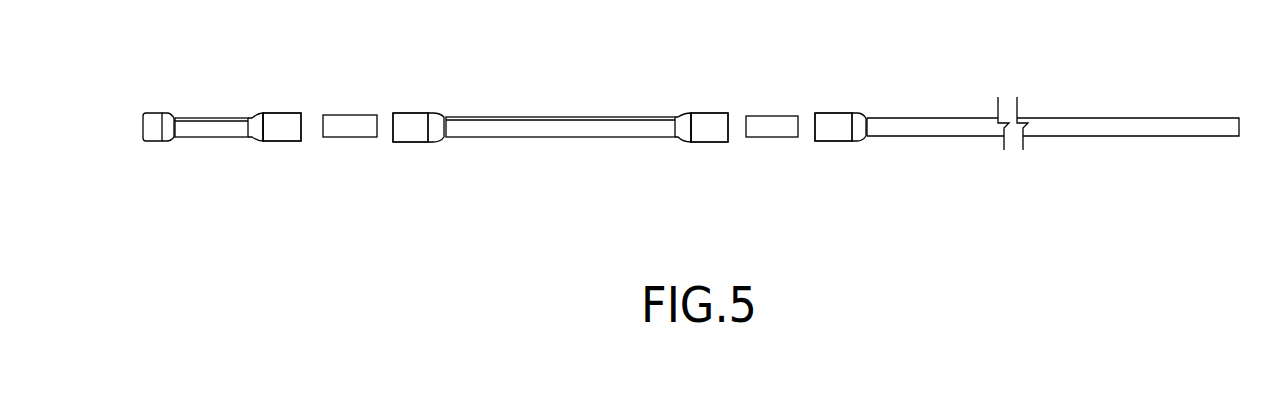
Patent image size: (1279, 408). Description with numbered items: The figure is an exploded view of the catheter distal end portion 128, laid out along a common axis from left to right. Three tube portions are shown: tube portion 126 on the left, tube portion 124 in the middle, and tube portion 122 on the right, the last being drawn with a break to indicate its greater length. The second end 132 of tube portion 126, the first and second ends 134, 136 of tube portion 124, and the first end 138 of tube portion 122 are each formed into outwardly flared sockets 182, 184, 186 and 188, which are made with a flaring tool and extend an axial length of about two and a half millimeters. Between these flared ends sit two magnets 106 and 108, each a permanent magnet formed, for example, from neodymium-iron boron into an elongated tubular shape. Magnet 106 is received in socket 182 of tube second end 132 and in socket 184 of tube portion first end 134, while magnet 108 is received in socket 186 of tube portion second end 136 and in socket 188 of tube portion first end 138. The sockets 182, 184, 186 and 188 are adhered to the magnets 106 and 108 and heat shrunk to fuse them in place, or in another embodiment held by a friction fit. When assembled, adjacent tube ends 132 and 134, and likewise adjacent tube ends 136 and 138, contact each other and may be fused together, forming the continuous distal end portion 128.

The magnet 106 is at (353, 138).
The magnet 108 is at (775, 138).
The tube portion 122 is at (938, 118).
The tube portion 124 is at (564, 117).
The tube portion 126 is at (208, 118).
The catheter distal end portion 128 is at (650, 77).
The second end 132 is at (280, 113).
The first end 134 is at (409, 113).
The second end 136 is at (707, 113).
The first end 138 is at (835, 113).
The socket 182 is at (283, 141).
The socket 184 is at (410, 142).
The socket 186 is at (708, 142).
The socket 188 is at (835, 141).